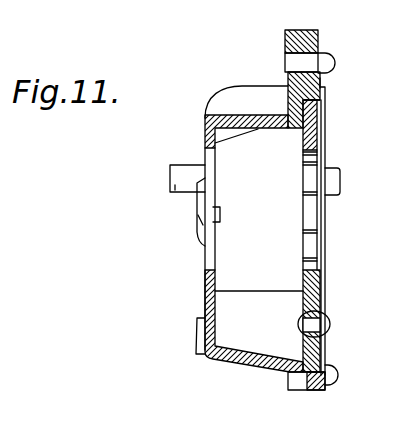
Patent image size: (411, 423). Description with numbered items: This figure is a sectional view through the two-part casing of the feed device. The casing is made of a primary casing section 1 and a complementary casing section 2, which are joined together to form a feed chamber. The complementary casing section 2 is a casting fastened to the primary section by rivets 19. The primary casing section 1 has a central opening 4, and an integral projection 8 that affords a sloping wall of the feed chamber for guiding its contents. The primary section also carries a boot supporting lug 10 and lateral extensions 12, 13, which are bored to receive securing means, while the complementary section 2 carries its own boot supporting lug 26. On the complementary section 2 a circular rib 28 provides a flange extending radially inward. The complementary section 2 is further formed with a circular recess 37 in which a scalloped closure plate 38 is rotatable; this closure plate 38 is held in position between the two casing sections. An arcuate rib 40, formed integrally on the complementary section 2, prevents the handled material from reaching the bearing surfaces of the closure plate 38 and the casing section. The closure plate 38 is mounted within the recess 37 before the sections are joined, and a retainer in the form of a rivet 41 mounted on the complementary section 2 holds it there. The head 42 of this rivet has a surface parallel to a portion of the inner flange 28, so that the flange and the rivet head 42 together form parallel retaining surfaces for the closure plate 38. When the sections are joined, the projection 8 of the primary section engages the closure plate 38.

The primary casing section 1 is at (225, 99).
The complementary casing section 2 is at (318, 32).
The central opening 4 is at (207, 257).
The integral projection 8 is at (292, 130).
The boot supporting lug 10 is at (173, 192).
The lateral extension 12 is at (292, 387).
The lateral extension 13 is at (284, 40).
The rivet 19 is at (333, 62).
The boot supporting lug 26 is at (333, 183).
The circular rib 28 is at (323, 110).
The circular recess 37 is at (322, 101).
The scalloped closure plate 38 is at (321, 133).
The arcuate rib 40 is at (321, 84).
The rivet 41 is at (322, 326).
The rivet head 42 is at (298, 325).